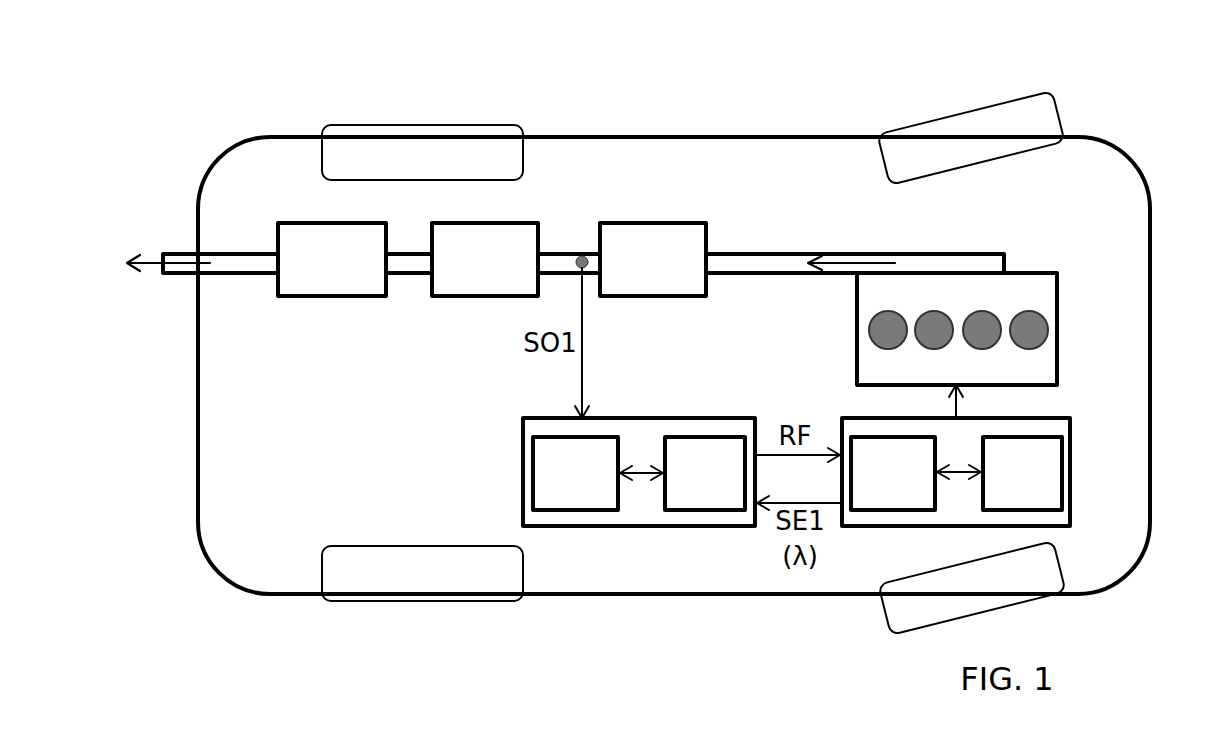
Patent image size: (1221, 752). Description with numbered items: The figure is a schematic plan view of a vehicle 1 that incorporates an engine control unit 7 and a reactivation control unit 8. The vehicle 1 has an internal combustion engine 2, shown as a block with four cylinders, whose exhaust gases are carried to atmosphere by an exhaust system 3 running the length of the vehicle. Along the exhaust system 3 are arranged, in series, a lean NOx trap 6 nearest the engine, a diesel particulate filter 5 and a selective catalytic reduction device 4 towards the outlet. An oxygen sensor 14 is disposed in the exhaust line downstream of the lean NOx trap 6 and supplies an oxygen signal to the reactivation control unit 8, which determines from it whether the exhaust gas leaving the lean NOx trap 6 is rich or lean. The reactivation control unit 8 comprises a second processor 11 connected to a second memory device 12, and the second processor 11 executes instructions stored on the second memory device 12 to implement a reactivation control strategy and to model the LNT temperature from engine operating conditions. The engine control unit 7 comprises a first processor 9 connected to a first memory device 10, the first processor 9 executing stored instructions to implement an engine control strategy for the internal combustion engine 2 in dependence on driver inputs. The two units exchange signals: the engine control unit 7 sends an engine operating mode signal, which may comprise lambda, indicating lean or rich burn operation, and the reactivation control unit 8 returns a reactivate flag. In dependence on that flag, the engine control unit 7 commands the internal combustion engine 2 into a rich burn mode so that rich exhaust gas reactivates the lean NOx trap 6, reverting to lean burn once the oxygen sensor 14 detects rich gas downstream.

The vehicle 1 is at (1171, 118).
The internal combustion engine 2 is at (1050, 366).
The exhaust system 3 is at (258, 208).
The selective catalytic reduction (SCR) device 4 is at (332, 259).
The diesel particulate filter (DPF) 5 is at (485, 259).
The lean NOx trap (LNT) 6 is at (653, 259).
The engine control unit 7 is at (934, 532).
The reactivation control unit 8 is at (639, 533).
The first processor 9 is at (893, 473).
The first memory device 10 is at (1022, 473).
The second processor 11 is at (575, 473).
The second memory device 12 is at (705, 473).
The oxygen sensor 14 is at (577, 256).